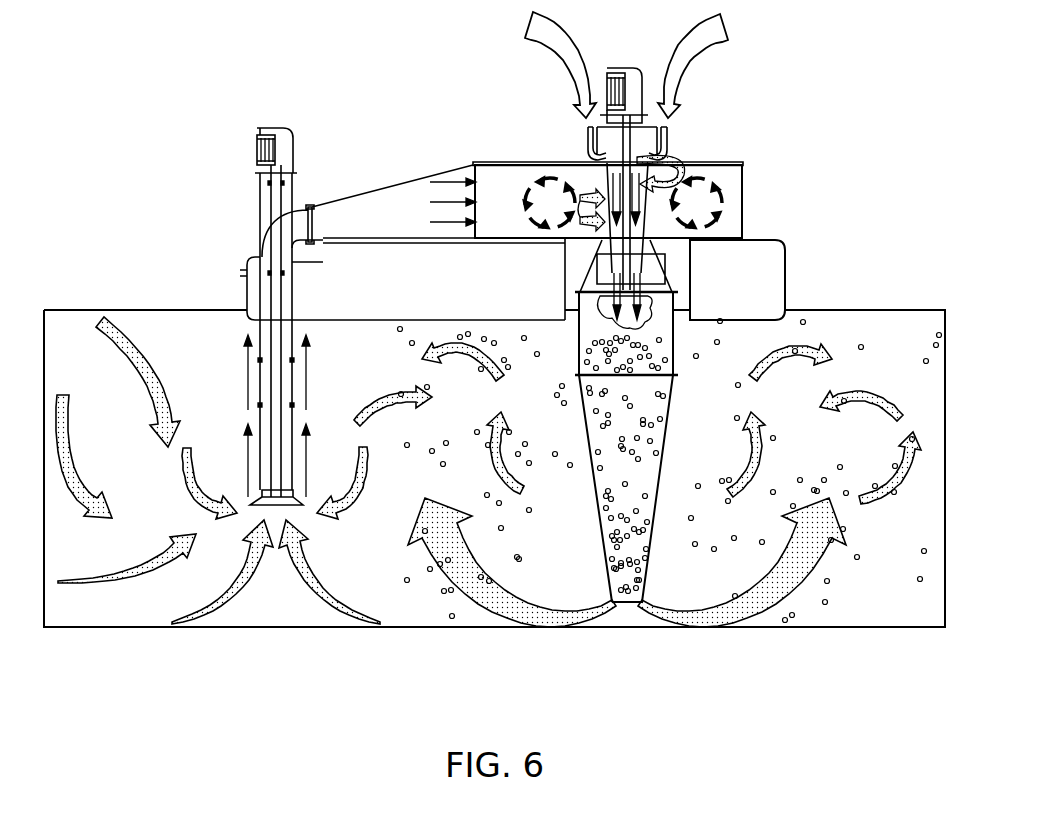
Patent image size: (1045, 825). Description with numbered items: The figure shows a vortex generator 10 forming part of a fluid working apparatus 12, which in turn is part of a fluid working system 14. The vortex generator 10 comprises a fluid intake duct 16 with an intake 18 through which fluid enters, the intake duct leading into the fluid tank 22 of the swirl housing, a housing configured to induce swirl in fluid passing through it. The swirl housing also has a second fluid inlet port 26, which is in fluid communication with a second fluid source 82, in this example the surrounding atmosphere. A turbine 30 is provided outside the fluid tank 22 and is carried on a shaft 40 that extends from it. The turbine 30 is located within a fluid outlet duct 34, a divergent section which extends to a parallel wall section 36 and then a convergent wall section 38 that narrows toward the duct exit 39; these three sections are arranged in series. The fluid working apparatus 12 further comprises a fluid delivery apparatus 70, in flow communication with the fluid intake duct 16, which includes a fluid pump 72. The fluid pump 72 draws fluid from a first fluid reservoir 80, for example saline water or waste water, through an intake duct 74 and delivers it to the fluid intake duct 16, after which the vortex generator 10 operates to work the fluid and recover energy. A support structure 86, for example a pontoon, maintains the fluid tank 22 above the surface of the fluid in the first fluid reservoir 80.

The vortex generator 10 is at (477, 163).
The fluid working apparatus 12 is at (306, 105).
The fluid working system 14 is at (124, 192).
The fluid intake duct 16 is at (599, 170).
The intake 18 is at (473, 170).
The fluid tank 22 is at (743, 182).
The second fluid inlet port 26 is at (660, 130).
The turbine 30 is at (635, 262).
The fluid outlet duct 34 is at (652, 273).
The parallel wall section 36 is at (668, 343).
The convergent wall section 38 is at (662, 470).
The duct exit 39 is at (628, 603).
The shaft 40 is at (627, 147).
The fluid delivery apparatus 70 is at (260, 200).
The fluid pump 72 is at (260, 133).
The intake duct 74 is at (260, 380).
The first fluid reservoir 80 is at (70, 310).
The second fluid source 82 is at (647, 34).
The support structure 86 is at (780, 240).